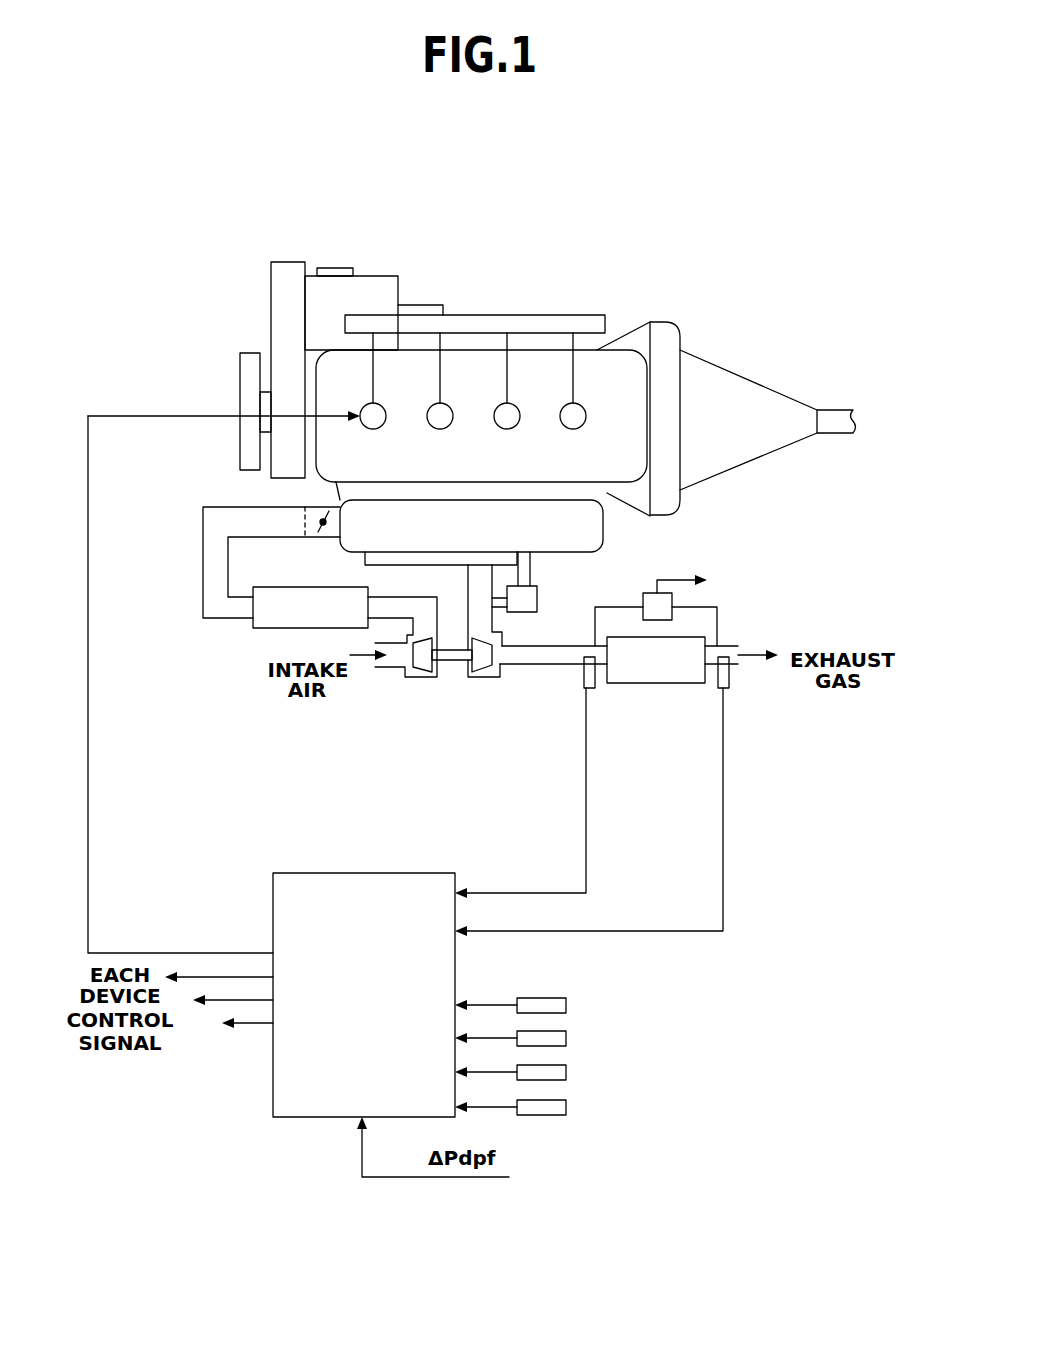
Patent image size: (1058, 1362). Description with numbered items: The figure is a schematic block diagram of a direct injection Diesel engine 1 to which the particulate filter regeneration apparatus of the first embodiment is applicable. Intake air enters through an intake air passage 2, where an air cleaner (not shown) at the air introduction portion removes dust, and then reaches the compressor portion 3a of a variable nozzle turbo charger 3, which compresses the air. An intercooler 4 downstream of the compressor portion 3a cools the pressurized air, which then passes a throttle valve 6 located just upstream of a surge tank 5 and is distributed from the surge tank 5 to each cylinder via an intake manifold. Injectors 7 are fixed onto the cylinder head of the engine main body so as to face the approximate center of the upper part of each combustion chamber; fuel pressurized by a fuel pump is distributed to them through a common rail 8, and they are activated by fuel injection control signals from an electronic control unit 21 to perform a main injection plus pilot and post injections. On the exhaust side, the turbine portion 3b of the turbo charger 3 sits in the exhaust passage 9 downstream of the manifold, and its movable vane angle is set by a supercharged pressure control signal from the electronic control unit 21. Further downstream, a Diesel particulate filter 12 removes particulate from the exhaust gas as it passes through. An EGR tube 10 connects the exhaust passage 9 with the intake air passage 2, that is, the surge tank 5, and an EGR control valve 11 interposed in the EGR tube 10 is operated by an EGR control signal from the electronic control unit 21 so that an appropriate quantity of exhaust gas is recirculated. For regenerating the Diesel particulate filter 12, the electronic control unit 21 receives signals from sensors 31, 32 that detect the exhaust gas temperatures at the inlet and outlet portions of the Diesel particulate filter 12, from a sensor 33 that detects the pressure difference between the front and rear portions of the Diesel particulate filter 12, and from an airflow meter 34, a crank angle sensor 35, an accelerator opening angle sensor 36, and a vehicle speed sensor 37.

The direct injection Diesel engine 1 is at (612, 252).
The intake air passage 2 is at (203, 560).
The turbo charger 3 is at (450, 690).
The compressor portion 3a is at (418, 678).
The turbine portion 3b is at (486, 678).
The intercooler 4 is at (265, 630).
The surge tank 5 is at (603, 527).
The throttle valve 6 is at (318, 535).
The injectors 7 is at (382, 426).
The common rail 8 is at (530, 315).
The exhaust passage 9 is at (535, 664).
The EGR tube 10 is at (530, 574).
The EGR control valve 11 is at (527, 597).
The Diesel particulate filter 12 is at (670, 685).
The electronic control unit 21 is at (393, 873).
The exhaust gas temperature sensor 31 is at (590, 690).
The exhaust gas temperature sensor 32 is at (723, 690).
The pressure difference sensor 33 is at (672, 600).
The airflow meter 34 is at (566, 1005).
The crank angle sensor 35 is at (566, 1038).
The accelerator opening angle sensor 36 is at (566, 1072).
The vehicle speed sensor 37 is at (566, 1107).